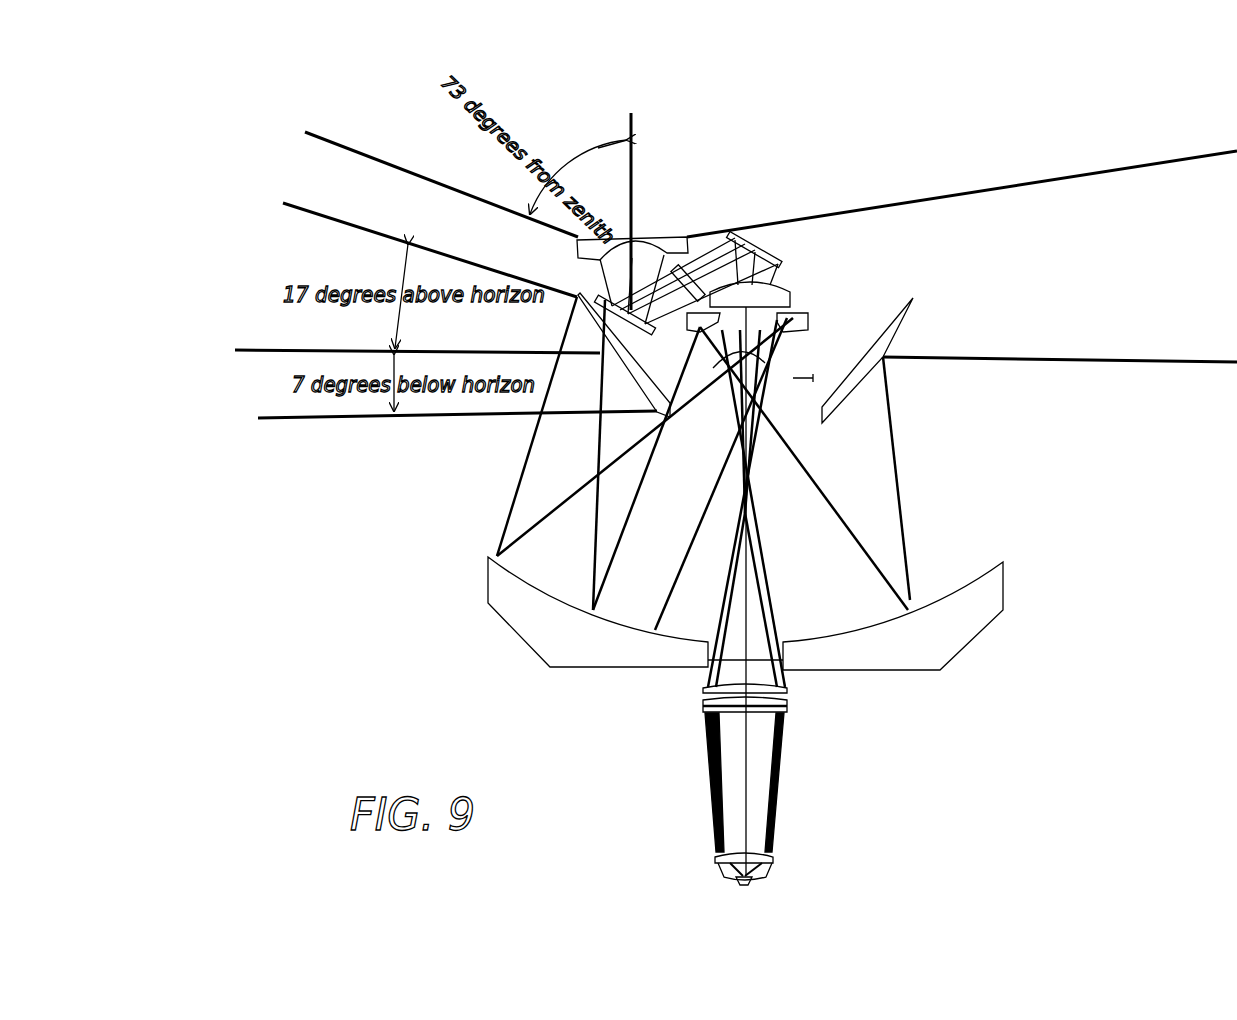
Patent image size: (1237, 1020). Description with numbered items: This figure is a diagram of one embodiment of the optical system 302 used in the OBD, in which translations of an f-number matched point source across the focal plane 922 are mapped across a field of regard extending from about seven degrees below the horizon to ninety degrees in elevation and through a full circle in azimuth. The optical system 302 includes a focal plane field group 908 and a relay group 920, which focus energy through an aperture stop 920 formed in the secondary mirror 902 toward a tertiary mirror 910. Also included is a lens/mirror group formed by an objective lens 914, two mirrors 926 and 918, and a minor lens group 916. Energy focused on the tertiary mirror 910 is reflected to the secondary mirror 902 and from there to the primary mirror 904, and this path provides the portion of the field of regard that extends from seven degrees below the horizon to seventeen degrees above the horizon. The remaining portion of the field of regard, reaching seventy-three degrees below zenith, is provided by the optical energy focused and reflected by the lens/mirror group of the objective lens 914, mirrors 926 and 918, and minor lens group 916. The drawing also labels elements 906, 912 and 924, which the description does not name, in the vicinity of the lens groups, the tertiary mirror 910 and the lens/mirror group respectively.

The optical system 302 is at (970, 118).
The secondary mirror 902 is at (556, 640).
The primary mirror 904 is at (580, 292).
The lens group 906 is at (686, 682).
The focal plane field group 908 is at (700, 832).
The tertiary mirror 910 is at (722, 362).
The field stop 912 is at (818, 378).
The objective lens 914 is at (662, 237).
The minor lens group 916 is at (700, 237).
The mirror 918 is at (790, 262).
The relay group 920 is at (753, 665).
The focal plane 922 is at (742, 882).
The lens 924 is at (790, 283).
The mirror 926 is at (633, 328).